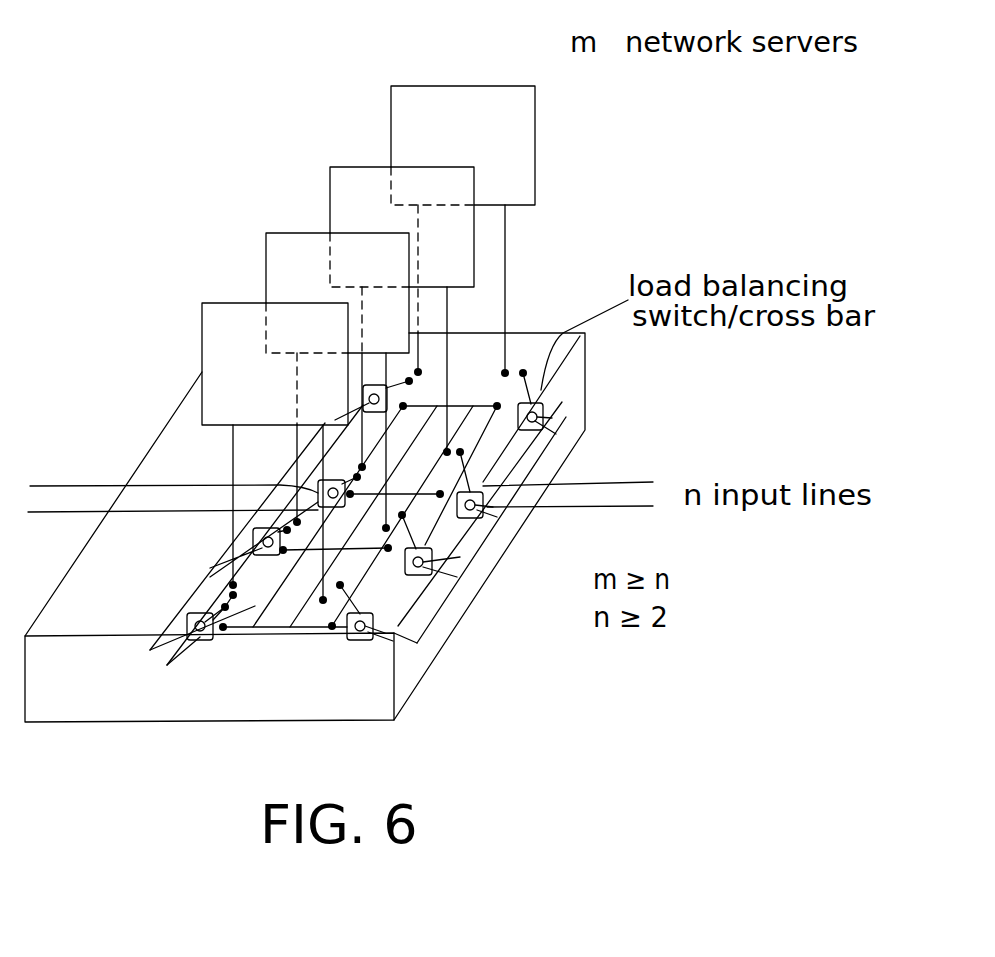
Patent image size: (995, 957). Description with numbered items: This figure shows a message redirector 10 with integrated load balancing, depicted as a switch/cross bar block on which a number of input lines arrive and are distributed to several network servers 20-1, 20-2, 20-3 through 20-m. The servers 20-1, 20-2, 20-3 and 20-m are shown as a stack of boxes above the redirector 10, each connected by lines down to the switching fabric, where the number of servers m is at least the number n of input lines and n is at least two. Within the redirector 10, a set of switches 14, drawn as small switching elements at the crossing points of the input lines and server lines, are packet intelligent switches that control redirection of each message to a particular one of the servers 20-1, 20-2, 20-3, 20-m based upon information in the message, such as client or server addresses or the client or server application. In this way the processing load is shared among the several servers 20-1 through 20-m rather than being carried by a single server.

The message redirector 10 is at (447, 638).
The switch 14 is at (201, 642).
The network server 20-1 is at (203, 302).
The network server 20-2 is at (295, 232).
The network server 20-3 is at (352, 166).
The network server 20-m is at (432, 85).